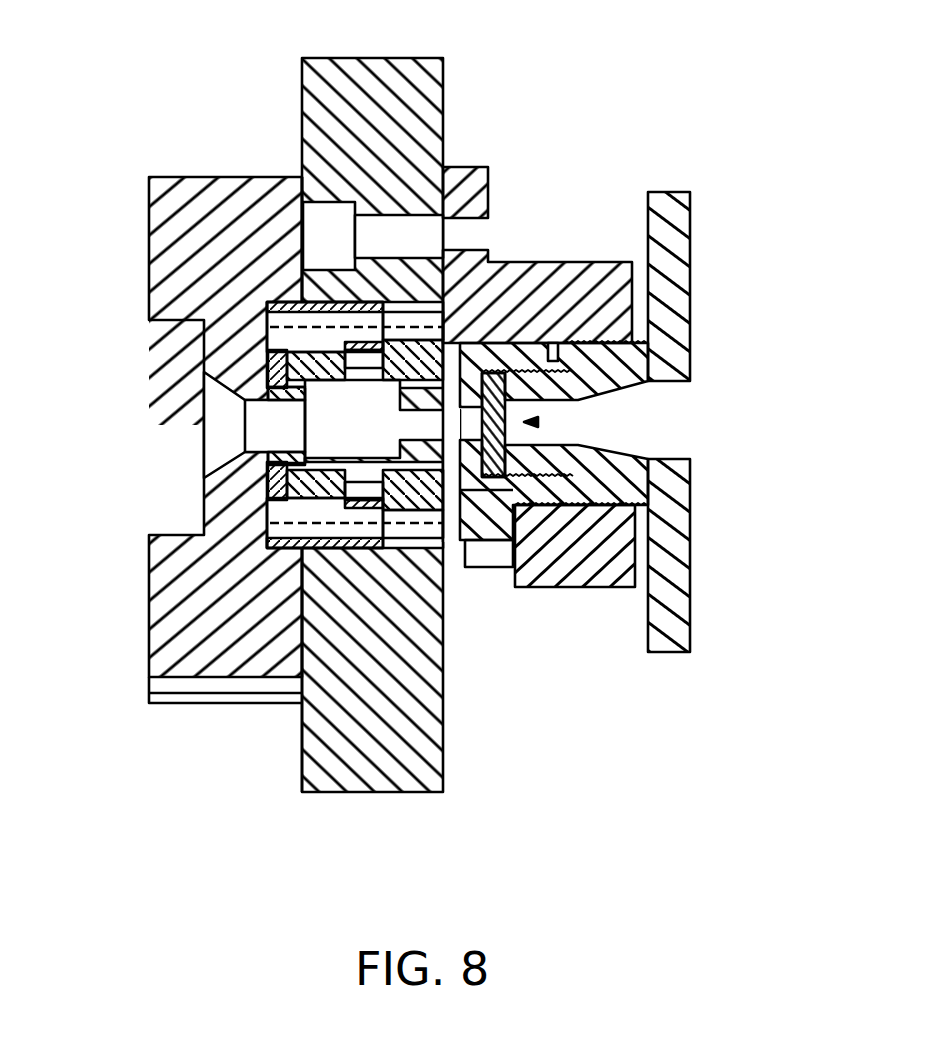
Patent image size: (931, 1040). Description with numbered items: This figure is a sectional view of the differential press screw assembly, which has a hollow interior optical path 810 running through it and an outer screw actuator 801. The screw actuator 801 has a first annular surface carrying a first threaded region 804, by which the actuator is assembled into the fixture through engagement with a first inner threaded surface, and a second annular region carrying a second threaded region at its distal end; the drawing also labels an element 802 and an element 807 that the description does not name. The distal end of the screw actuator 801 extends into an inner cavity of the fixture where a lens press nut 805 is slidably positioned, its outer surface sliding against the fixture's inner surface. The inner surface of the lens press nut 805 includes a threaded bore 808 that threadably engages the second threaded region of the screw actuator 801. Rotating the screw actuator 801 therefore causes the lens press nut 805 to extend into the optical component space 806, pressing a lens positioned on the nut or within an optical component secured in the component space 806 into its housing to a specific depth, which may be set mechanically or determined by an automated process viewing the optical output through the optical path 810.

The outer screw actuator 801 is at (668, 192).
The upper clamp block 802 is at (528, 342).
The first threaded region 804 is at (597, 507).
The lens press nut 805 is at (400, 450).
The optical component space 806 is at (352, 418).
The threaded connection 807 is at (588, 340).
The threaded bore 808 is at (493, 340).
The hollow interior optical path 810 is at (536, 422).